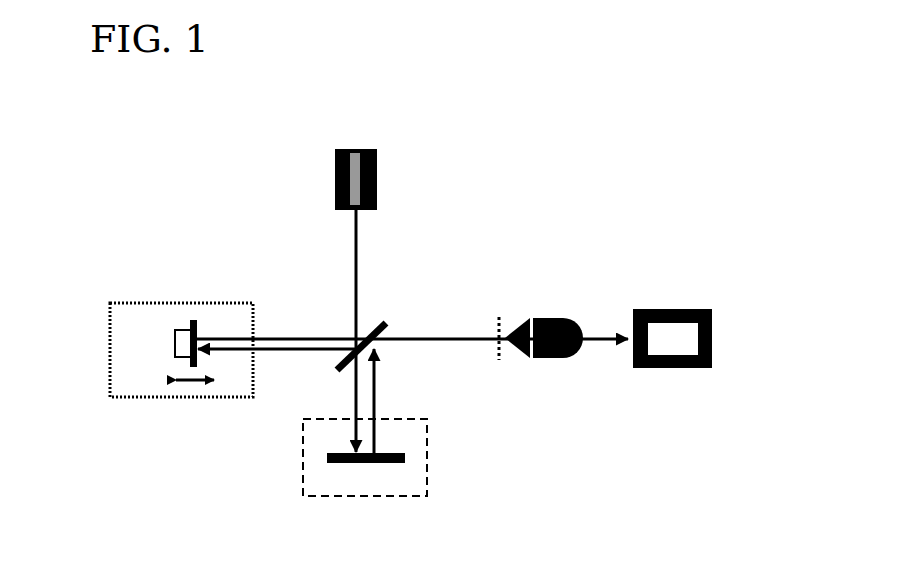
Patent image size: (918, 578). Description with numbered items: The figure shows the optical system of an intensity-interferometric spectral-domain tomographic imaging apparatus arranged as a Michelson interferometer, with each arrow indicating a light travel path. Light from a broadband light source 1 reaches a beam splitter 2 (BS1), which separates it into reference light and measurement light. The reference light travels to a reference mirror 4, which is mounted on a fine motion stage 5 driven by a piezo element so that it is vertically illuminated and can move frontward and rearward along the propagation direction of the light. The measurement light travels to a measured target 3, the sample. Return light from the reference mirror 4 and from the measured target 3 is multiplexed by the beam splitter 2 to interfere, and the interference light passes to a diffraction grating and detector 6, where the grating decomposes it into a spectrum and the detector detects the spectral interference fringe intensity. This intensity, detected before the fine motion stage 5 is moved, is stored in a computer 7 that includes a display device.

The light source 1 is at (384, 177).
The beam splitter 2 is at (384, 313).
The measured target 3 is at (373, 471).
The reference mirror 4 is at (194, 312).
The fine motion stage 5 is at (172, 358).
The diffraction grating and detector 6 is at (559, 310).
The computer 7 is at (676, 371).